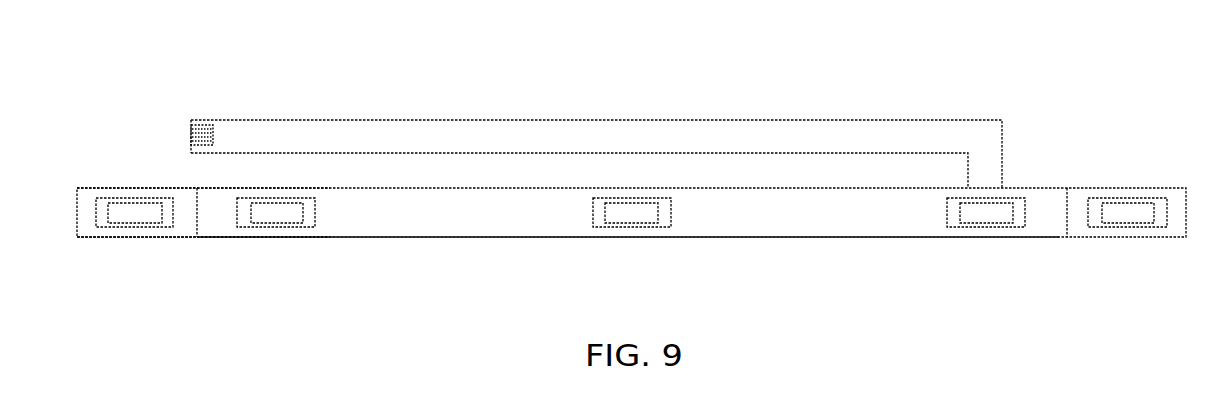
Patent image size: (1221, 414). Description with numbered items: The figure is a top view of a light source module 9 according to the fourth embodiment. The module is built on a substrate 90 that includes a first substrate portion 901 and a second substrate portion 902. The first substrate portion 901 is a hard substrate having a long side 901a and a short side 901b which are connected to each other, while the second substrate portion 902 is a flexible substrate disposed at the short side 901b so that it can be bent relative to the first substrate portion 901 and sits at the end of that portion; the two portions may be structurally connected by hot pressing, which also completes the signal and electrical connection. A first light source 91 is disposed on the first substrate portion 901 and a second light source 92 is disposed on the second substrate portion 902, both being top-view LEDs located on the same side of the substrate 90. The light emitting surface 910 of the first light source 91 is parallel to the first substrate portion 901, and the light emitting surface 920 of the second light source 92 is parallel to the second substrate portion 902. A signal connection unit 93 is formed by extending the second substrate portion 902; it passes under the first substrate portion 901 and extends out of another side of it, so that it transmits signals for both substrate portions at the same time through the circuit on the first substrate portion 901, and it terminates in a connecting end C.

The light source module 9 is at (87, 73).
The substrate 90 is at (243, 289).
The first substrate portion 901 is at (243, 229).
The second substrate portion 902 is at (175, 229).
The long side 901a is at (426, 237).
The short side 901b is at (204, 205).
The first light source 91 is at (310, 225).
The light emitting surface 910 is at (281, 218).
The second light source 92 is at (103, 219).
The light emitting surface 920 is at (133, 215).
The signal connection unit 93 is at (995, 131).
The connecting end C is at (191, 134).